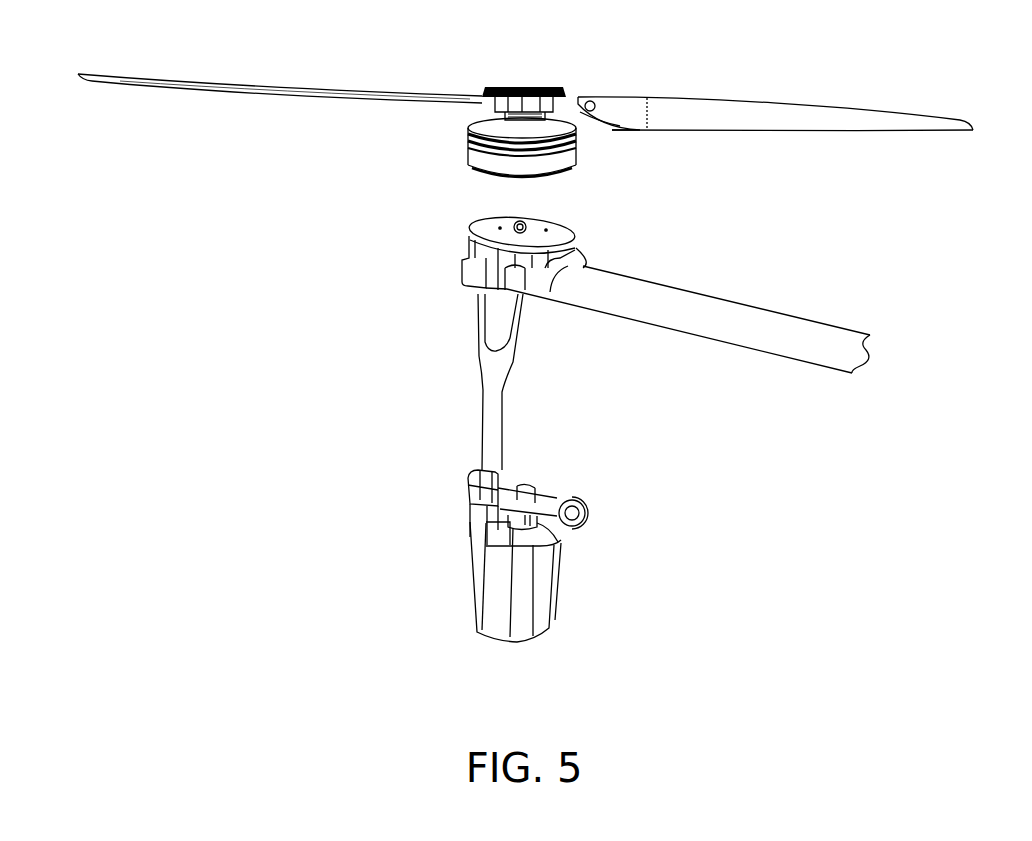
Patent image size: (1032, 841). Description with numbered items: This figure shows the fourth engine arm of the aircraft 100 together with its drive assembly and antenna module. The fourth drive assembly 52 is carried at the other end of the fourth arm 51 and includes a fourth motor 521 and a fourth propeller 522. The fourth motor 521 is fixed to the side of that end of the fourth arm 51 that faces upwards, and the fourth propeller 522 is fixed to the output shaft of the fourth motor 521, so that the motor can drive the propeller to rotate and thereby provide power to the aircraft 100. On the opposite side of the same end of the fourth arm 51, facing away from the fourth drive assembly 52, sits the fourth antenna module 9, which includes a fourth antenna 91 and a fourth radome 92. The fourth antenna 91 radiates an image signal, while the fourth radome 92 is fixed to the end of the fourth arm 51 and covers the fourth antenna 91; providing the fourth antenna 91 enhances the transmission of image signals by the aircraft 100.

The aircraft 100 is at (442, 58).
The fourth drive assembly 52 is at (681, 176).
The fourth motor 521 is at (578, 158).
The fourth propeller 522 is at (622, 115).
The fourth arm 51 is at (582, 273).
The fourth antenna module 9 is at (622, 368).
The fourth antenna 91 is at (502, 374).
The fourth radome 92 is at (538, 502).